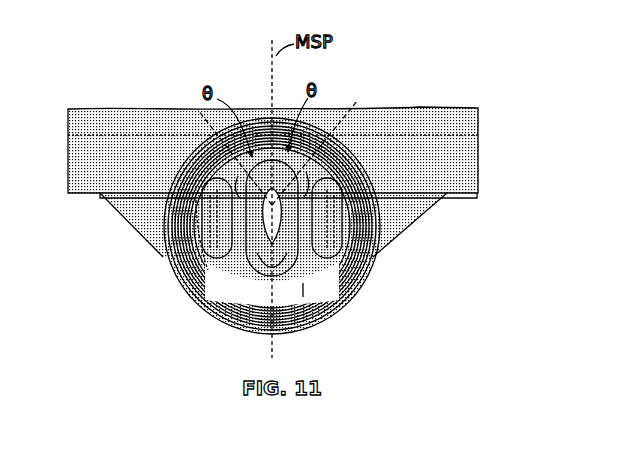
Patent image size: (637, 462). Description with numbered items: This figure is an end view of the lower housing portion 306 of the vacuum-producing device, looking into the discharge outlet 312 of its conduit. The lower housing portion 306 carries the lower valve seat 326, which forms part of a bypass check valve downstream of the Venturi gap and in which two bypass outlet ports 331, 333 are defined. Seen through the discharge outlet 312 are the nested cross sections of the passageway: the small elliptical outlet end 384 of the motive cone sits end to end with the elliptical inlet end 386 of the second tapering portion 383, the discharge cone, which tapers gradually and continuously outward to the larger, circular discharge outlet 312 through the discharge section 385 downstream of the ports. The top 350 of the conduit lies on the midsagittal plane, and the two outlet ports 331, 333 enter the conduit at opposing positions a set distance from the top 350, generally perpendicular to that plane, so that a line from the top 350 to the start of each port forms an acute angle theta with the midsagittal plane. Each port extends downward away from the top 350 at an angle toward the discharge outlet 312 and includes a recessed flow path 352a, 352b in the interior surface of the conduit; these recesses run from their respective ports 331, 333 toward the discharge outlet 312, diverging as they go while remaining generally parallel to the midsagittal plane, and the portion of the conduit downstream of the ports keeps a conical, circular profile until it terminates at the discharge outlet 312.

The lower housing portion 306 is at (150, 97).
The discharge outlet port 312 is at (318, 327).
The lower valve seat 326 is at (478, 140).
The bypass outlet port 331 is at (243, 178).
The bypass outlet port 333 is at (302, 173).
The top of the conduit 350 is at (273, 119).
The recessed flow path 352a is at (210, 238).
The recessed flow path 352b is at (338, 250).
The second tapering portion 383 is at (240, 213).
The outlet end of the motive cone 384 is at (285, 229).
The discharge section 385 is at (303, 295).
The inlet end of the discharge cone 386 is at (258, 272).